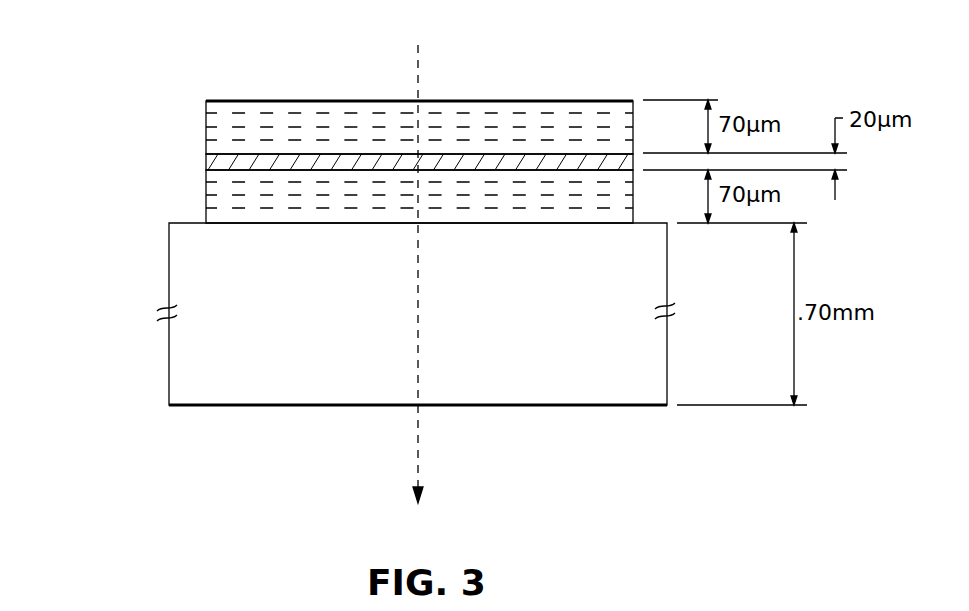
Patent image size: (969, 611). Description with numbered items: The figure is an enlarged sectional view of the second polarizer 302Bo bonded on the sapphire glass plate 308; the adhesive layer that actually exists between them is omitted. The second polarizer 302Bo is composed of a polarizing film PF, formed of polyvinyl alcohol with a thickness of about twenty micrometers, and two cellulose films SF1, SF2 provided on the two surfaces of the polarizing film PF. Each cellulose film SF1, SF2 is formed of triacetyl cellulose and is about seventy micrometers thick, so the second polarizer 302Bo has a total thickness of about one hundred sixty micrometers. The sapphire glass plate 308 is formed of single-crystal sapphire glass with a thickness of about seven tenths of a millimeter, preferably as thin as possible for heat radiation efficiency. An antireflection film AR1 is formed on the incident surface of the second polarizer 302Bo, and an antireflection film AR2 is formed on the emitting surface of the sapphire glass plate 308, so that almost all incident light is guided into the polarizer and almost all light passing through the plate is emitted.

The second polarizer 302Bo is at (331, 162).
The cellulose film SF1 is at (206, 125).
The polarizing film PF is at (206, 163).
The cellulose film SF2 is at (375, 196).
The sapphire glass plate 308 is at (169, 353).
The antireflection film AR1 is at (568, 100).
The antireflection film AR2 is at (564, 408).